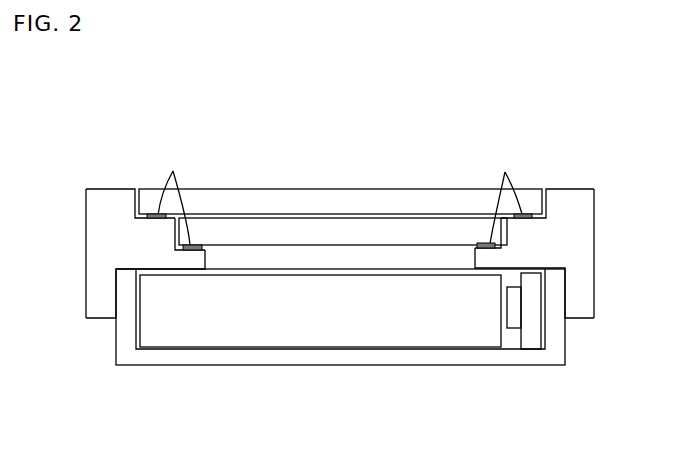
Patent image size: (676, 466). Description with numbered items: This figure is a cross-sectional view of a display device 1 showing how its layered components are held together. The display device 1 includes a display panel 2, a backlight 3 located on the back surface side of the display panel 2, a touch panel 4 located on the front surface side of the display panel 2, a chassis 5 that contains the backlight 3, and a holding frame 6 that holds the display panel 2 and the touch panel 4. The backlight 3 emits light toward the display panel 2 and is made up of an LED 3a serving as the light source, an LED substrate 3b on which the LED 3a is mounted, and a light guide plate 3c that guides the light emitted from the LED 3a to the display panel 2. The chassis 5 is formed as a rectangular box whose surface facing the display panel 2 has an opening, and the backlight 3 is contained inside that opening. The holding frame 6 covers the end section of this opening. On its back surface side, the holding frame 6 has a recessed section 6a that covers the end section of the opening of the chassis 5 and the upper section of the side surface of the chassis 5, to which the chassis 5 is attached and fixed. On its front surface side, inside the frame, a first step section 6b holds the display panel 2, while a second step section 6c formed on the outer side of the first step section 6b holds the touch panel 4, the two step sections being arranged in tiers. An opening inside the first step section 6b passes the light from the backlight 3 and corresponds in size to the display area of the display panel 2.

The display device 1 is at (600, 133).
The display panel 2 is at (336, 232).
The backlight 3 is at (552, 410).
The LED 3a is at (513, 327).
The LED substrate 3b is at (536, 340).
The light guide plate 3c is at (485, 340).
The touch panel 4 is at (398, 202).
The chassis 5 is at (394, 359).
The holding frame 6 is at (96, 307).
The recessed section 6a is at (167, 270).
The first step section 6b is at (177, 246).
The second step section 6c is at (142, 217).